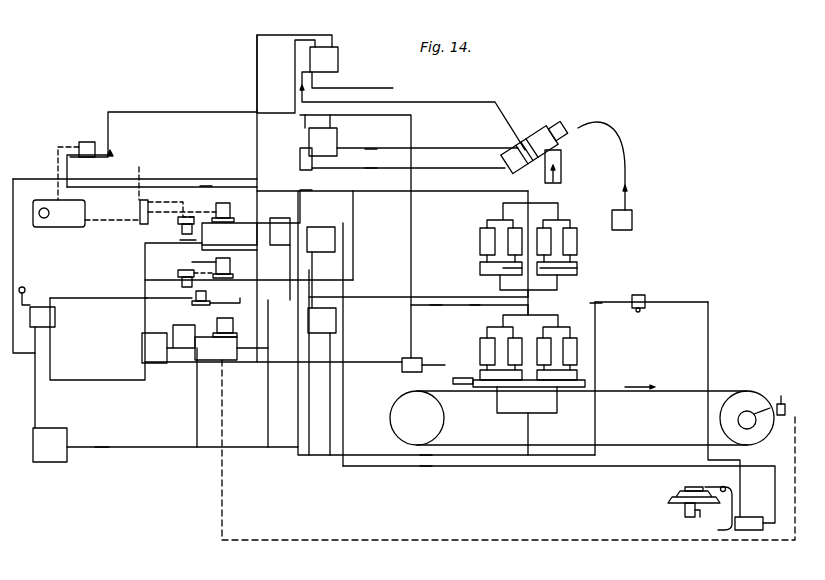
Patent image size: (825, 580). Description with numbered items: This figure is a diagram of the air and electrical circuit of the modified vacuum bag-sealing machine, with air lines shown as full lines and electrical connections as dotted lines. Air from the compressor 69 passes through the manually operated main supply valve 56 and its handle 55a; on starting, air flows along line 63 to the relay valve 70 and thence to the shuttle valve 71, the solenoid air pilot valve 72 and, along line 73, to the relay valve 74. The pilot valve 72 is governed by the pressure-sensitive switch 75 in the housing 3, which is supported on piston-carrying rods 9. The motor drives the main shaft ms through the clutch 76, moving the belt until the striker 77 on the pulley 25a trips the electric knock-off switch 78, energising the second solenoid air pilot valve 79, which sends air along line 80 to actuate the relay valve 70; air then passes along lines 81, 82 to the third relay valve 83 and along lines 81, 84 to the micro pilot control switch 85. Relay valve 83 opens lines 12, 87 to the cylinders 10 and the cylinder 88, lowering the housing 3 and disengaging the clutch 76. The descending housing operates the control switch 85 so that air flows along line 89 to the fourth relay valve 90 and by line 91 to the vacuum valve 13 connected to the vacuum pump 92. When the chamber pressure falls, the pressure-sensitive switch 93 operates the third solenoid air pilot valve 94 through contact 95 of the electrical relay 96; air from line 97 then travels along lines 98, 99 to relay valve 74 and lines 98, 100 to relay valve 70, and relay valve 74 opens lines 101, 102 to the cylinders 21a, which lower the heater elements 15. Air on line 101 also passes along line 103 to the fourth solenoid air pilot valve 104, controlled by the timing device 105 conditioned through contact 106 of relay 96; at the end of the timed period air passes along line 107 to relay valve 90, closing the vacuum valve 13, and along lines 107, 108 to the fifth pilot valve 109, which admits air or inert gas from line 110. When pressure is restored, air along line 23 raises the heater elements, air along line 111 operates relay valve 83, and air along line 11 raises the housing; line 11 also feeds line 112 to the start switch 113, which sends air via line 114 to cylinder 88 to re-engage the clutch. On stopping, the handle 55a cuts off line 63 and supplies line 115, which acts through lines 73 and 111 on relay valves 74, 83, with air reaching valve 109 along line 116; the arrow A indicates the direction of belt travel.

The housing 3 is at (586, 384).
The piston-carrying rods 9 is at (480, 373).
The cylinders 10 is at (512, 350).
The line 11 is at (298, 410).
The line 12 is at (373, 302).
The vacuum valve 13 is at (545, 130).
The heater elements 15 is at (482, 268).
The cylinders 21a is at (512, 246).
The line 23 is at (378, 297).
The pulley 25a is at (757, 396).
The handle 55a is at (30, 298).
The main supply valve 56 is at (55, 318).
The line 63 is at (78, 378).
The compressor 69 is at (50, 445).
The relay valve 70 is at (142, 350).
The shuttle valve 71 is at (208, 298).
The solenoid air pilot valve 72 is at (231, 272).
The line 73 is at (259, 280).
The relay valve 74 is at (321, 267).
The pressure-sensitive switch 75 is at (184, 284).
The clutch 76 is at (672, 505).
The striker 77 is at (756, 428).
The electric knock-off switch 78 is at (786, 397).
The second solenoid air pilot valve 79 is at (217, 327).
The line 80 is at (226, 360).
The line 81 is at (188, 360).
The line 82 is at (256, 323).
The third relay valve 83 is at (322, 381).
The line 84 is at (368, 364).
The control switch 85 is at (418, 358).
The line 87 is at (344, 431).
The cylinder 88 is at (748, 517).
The line 89 is at (411, 258).
The fourth relay valve 90 is at (318, 149).
The line 91 is at (450, 148).
The vacuum pump 92 is at (632, 220).
The pressure-sensitive switch 93 is at (182, 236).
The third solenoid air pilot valve 94 is at (231, 215).
The contact 95 is at (148, 226).
The electrical relay 96 is at (140, 210).
The line 97 is at (178, 270).
The line 98 is at (263, 222).
The line 99 is at (300, 220).
The line 100 is at (287, 259).
The line 101 is at (318, 223).
The line 102 is at (382, 192).
The line 103 is at (228, 179).
The fourth solenoid air pilot valve 104 is at (84, 142).
The timing device 105 is at (70, 227).
The contact 106 is at (140, 224).
The line 107 is at (157, 112).
The line 108 is at (295, 103).
The fifth pilot valve 109 is at (412, 98).
The line 110 is at (382, 88).
The line 111 is at (306, 299).
The line 112 is at (597, 421).
The start switch 113 is at (645, 298).
The line 114 is at (708, 331).
The line 115 is at (108, 298).
The line 116 is at (261, 80).
The direction arrow A is at (640, 380).
The main shaft ms is at (690, 520).